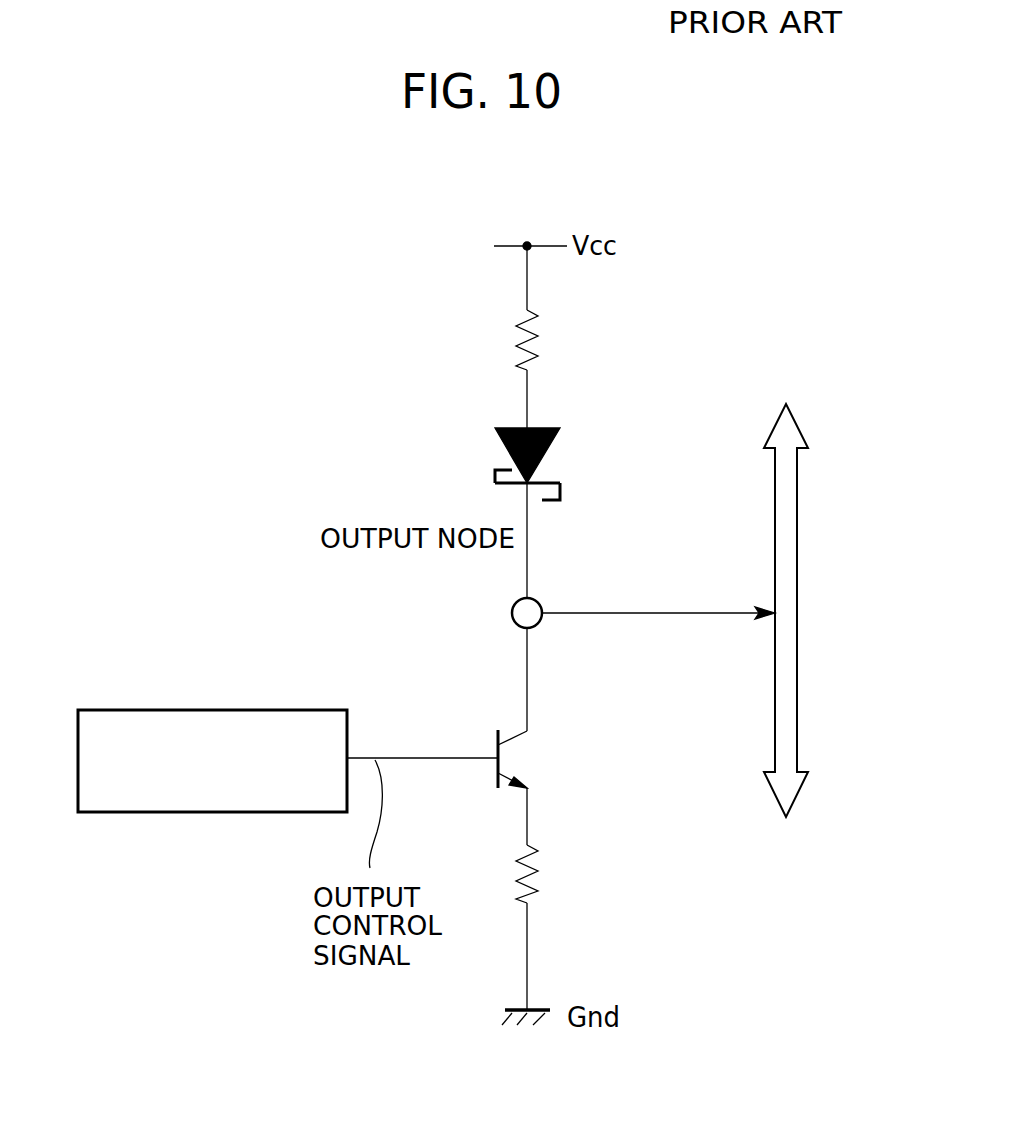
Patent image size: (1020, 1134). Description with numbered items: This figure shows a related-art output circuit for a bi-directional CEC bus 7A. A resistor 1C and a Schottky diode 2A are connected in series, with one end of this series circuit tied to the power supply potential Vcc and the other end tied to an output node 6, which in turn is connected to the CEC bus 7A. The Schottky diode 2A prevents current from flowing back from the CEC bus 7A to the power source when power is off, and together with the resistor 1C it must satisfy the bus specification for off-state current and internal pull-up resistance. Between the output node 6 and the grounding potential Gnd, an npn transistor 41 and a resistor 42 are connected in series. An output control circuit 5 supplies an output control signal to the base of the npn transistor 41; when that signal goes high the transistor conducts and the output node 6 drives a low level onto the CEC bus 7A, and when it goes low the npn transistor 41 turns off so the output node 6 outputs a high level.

The resistor 1C is at (536, 335).
The Schottky diode 2A is at (560, 441).
The output node 6 is at (513, 605).
The CEC bus 7A is at (792, 631).
The output control circuit 5 is at (194, 710).
The npn transistor 41 is at (525, 753).
The resistor 42 is at (536, 870).